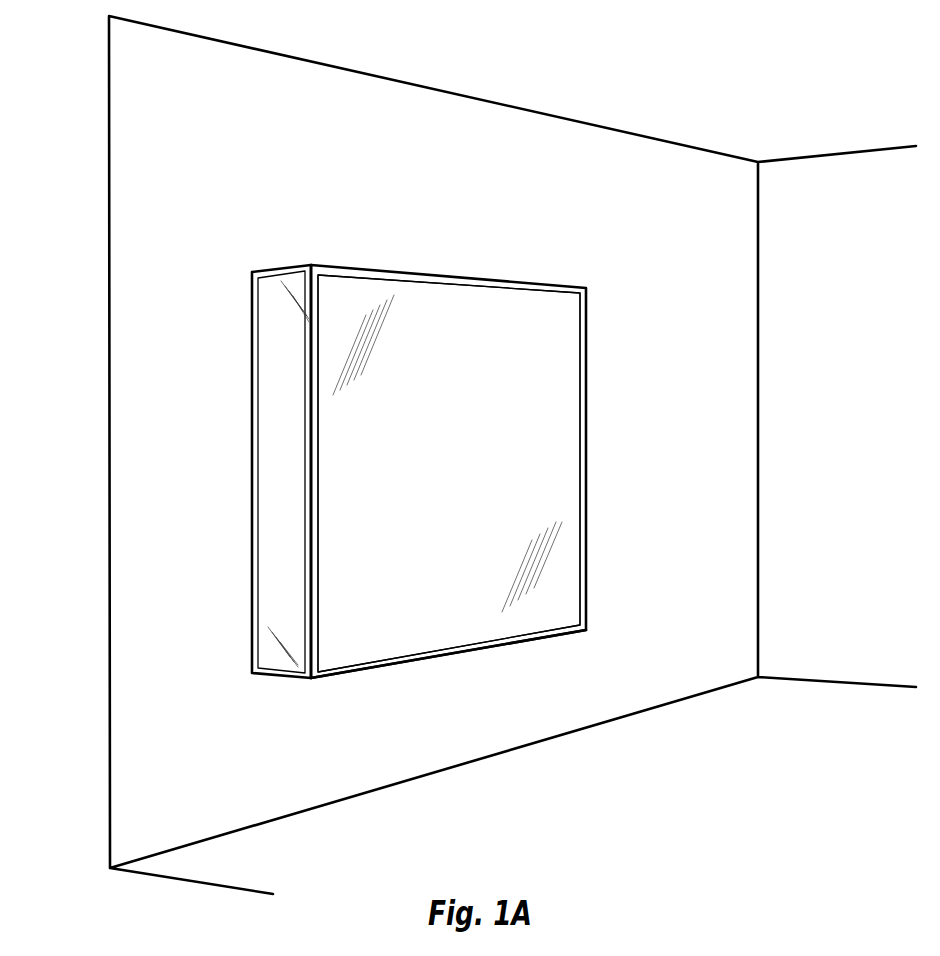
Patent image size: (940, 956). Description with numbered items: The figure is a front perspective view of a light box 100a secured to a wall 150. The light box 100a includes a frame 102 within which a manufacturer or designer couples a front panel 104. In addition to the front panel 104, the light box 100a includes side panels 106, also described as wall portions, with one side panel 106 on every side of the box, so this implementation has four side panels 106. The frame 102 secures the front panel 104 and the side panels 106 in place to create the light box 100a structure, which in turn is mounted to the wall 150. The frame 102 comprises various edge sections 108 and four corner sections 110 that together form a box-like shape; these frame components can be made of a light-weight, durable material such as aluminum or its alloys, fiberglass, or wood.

The light box 100a is at (418, 473).
The frame 102 is at (435, 657).
The front panel 104 is at (527, 580).
The side panel 106 is at (280, 588).
The edge section 108 is at (438, 277).
The corner section 110 is at (270, 268).
The wall 150 is at (132, 328).